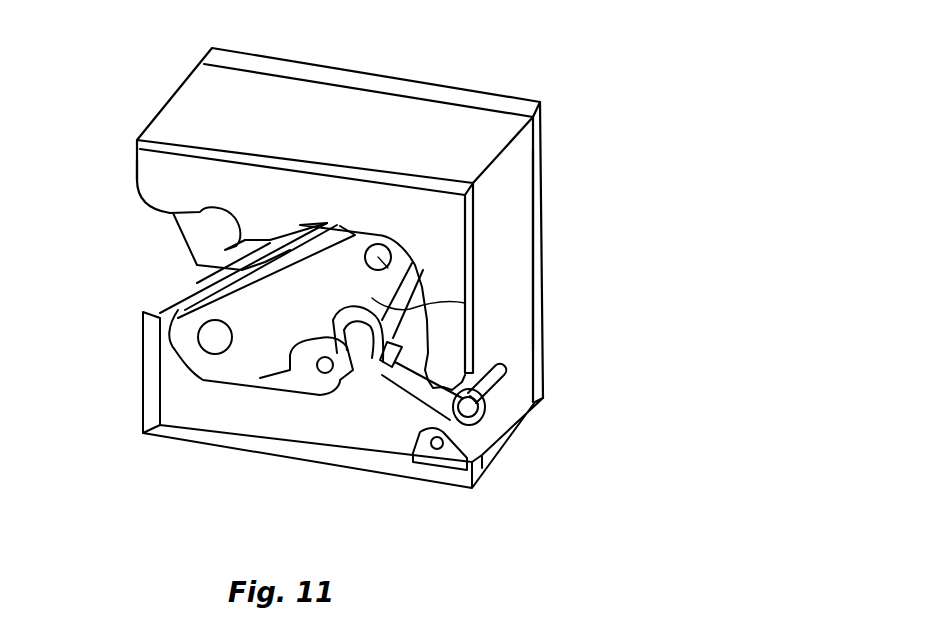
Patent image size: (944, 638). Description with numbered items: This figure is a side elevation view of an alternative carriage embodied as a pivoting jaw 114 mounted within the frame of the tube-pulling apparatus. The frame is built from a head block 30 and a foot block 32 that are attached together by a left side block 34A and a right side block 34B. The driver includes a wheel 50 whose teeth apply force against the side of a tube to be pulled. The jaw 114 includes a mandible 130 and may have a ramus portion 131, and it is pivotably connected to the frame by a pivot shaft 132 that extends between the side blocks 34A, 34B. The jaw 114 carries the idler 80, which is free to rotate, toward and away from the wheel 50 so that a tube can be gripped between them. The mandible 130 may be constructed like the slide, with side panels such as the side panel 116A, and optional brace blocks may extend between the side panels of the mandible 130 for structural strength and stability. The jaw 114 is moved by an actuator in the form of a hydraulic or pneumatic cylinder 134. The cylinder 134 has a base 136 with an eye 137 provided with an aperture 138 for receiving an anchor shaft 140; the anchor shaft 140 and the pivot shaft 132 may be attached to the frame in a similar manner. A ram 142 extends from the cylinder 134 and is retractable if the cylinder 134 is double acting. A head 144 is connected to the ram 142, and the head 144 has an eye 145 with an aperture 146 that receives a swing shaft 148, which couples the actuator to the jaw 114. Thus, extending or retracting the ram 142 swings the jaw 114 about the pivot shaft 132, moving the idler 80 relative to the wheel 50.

The head block 30 is at (458, 130).
The left side block 34A is at (158, 168).
The right side block 34B is at (538, 163).
The foot block 32 is at (522, 417).
The wheel 50 is at (185, 233).
The idler 80 is at (170, 298).
The mandible 130 is at (202, 383).
The jaw 114 is at (255, 355).
The side panel 116A is at (195, 388).
The swing shaft 148 is at (256, 416).
The aperture 146 is at (300, 358).
The eye 145 is at (343, 316).
The pivot shaft 132 is at (372, 298).
The ramus portion 131 is at (415, 320).
The cylinder 134 is at (408, 395).
The ram 142 is at (355, 375).
The head 144 is at (385, 375).
The anchor shaft 140 is at (497, 373).
The eye 137 is at (490, 430).
The aperture 138 is at (517, 407).
The base 136 is at (482, 440).